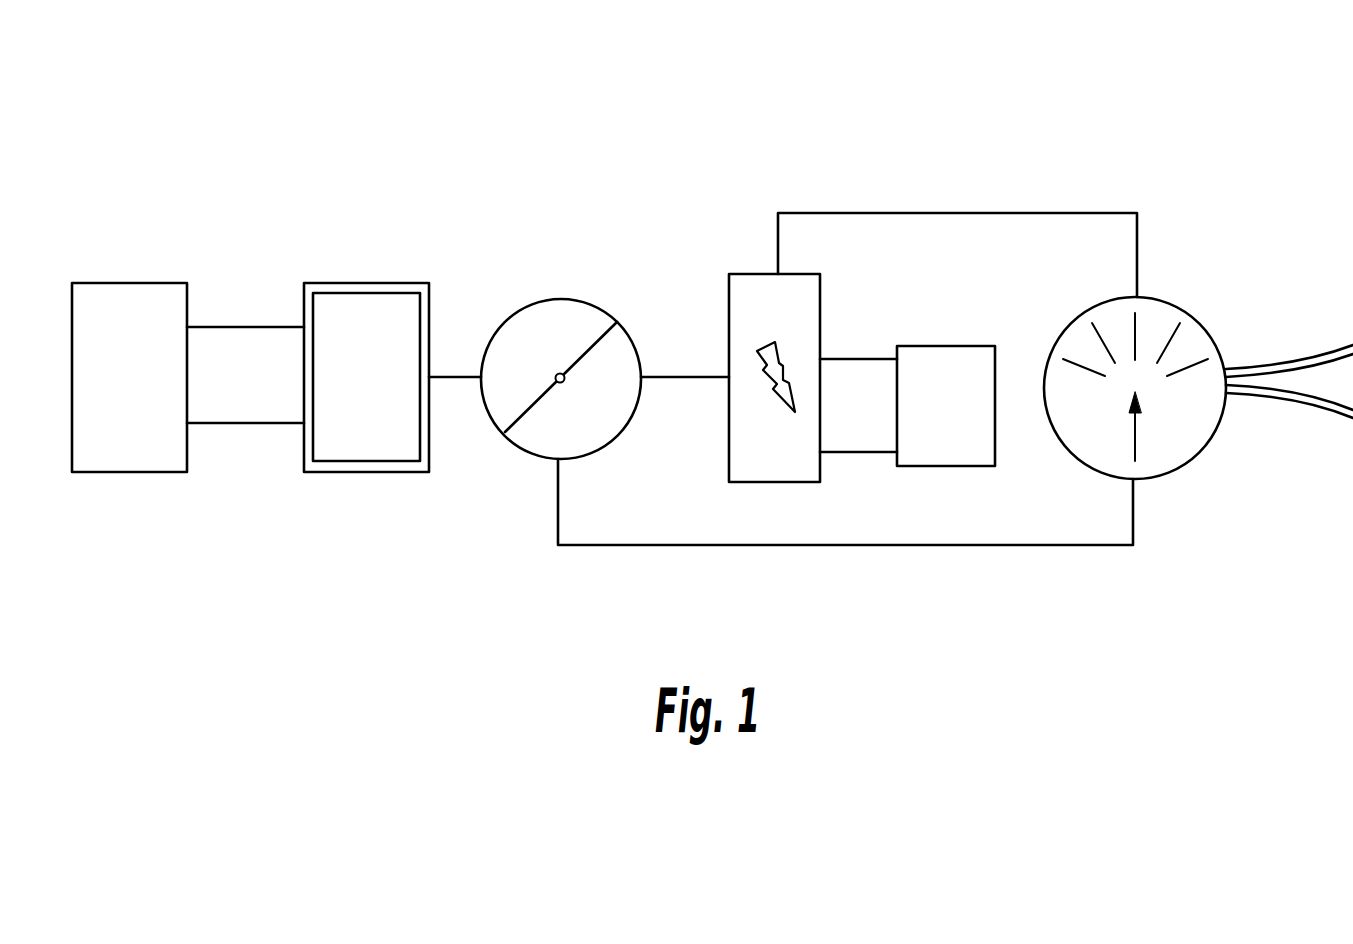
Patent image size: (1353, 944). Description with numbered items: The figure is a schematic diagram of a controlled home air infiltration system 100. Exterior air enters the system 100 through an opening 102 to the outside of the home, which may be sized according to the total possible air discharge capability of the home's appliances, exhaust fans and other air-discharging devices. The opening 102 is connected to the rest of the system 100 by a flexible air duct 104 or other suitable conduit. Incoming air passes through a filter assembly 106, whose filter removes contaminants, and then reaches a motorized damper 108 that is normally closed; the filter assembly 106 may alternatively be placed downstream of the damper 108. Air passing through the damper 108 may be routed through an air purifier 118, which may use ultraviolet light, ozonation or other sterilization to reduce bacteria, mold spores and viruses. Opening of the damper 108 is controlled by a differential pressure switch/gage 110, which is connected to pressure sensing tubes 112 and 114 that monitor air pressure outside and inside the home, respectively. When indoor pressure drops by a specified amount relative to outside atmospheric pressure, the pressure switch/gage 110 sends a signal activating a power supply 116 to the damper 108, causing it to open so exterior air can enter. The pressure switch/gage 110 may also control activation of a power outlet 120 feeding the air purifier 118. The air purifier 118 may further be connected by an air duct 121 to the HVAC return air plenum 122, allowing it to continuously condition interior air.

The controlled home air infiltration system 100 is at (1012, 146).
The opening 102 is at (130, 283).
The flexible air duct 104 is at (247, 327).
The filter assembly 106 is at (362, 283).
The motorized damper 108 is at (565, 299).
The differential pressure switch/gage 110 is at (1173, 298).
The pressure sensing tube 112 is at (1297, 367).
The pressure sensing tube 114 is at (1297, 402).
The power supply 116 is at (827, 545).
The air purifier 118 is at (748, 274).
The power outlet 120 is at (895, 213).
The air duct 121 is at (853, 358).
The return air plenum 122 is at (940, 346).